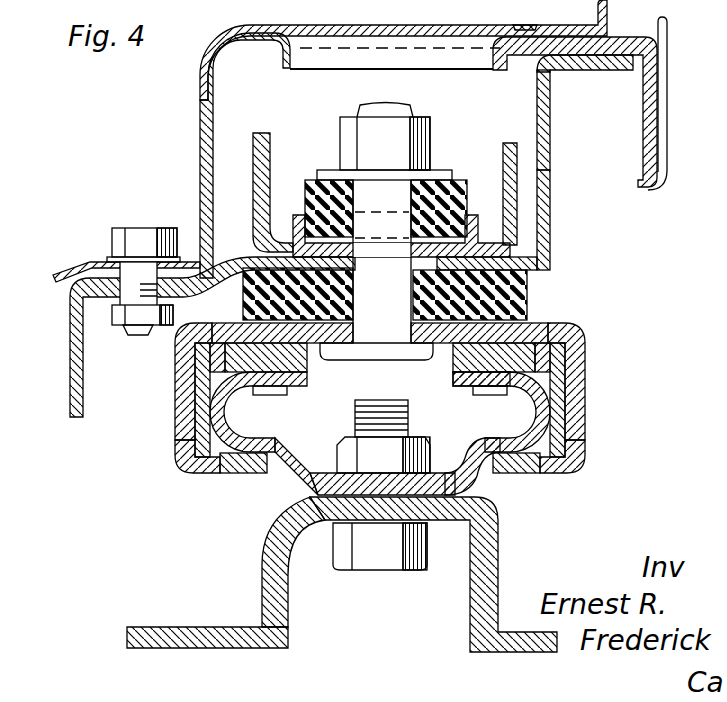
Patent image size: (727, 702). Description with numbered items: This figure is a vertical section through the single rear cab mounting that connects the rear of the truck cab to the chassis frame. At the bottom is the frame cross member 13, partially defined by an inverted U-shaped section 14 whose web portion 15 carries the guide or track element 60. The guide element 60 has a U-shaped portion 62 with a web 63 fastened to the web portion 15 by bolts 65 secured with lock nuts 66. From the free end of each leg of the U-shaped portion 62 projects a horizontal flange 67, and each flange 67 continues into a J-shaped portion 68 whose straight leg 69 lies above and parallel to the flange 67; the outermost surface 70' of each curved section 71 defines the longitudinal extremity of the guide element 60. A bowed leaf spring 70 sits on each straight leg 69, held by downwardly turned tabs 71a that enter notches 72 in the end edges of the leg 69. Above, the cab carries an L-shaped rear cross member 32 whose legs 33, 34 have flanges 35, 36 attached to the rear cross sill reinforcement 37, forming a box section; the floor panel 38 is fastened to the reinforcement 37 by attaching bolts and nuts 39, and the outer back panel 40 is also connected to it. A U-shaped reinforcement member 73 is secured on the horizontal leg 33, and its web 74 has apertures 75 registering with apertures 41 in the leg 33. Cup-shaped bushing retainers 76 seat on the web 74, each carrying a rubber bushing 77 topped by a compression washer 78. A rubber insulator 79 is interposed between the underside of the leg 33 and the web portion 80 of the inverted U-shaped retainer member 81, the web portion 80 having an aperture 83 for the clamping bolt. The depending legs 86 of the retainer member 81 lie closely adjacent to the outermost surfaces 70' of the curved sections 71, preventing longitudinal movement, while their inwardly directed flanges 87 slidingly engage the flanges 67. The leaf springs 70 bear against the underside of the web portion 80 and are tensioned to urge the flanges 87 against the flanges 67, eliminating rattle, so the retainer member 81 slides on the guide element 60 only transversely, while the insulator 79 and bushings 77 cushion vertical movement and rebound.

The frame cross member 13 is at (256, 549).
The inverted U-shaped section 14 is at (265, 568).
The web portion 15 is at (325, 522).
The rear cross member 32 is at (553, 178).
The leg 33 is at (493, 312).
The leg 34 is at (550, 138).
The flange 35 is at (98, 299).
The flange 36 is at (597, 71).
The rear cross sill reinforcement 37 is at (198, 119).
The floor panel 38 is at (66, 258).
The attaching bolts and nuts 39 is at (127, 226).
The outer back panel 40 is at (661, 58).
The apertures 41 is at (323, 282).
The guide element 60 is at (480, 470).
The U-shaped portion 62 is at (283, 470).
The web 63 is at (338, 472).
The bolts 65 is at (390, 572).
The lock nuts 66 is at (425, 460).
The flange 67 is at (522, 475).
The J-shaped portion 68 is at (586, 378).
The straight leg 69 is at (462, 378).
The bowed leaf spring 70 is at (412, 333).
The outermost surface 70' is at (388, 433).
The curved section 71 is at (562, 440).
The tab 71a is at (480, 396).
The notches 72 is at (310, 373).
The reinforcement member 73 is at (272, 155).
The web 74 is at (520, 236).
The apertures 75 is at (410, 262).
The bushing retainer 76 is at (480, 213).
The rubber bushing 77 is at (300, 175).
The compression washer 78 is at (440, 168).
The rubber insulator 79 is at (530, 307).
The web portion 80 is at (523, 333).
The retainer member 81 is at (587, 343).
The aperture 83 is at (362, 333).
The depending legs 86 is at (572, 408).
The inwardly directed flanges 87 is at (546, 476).